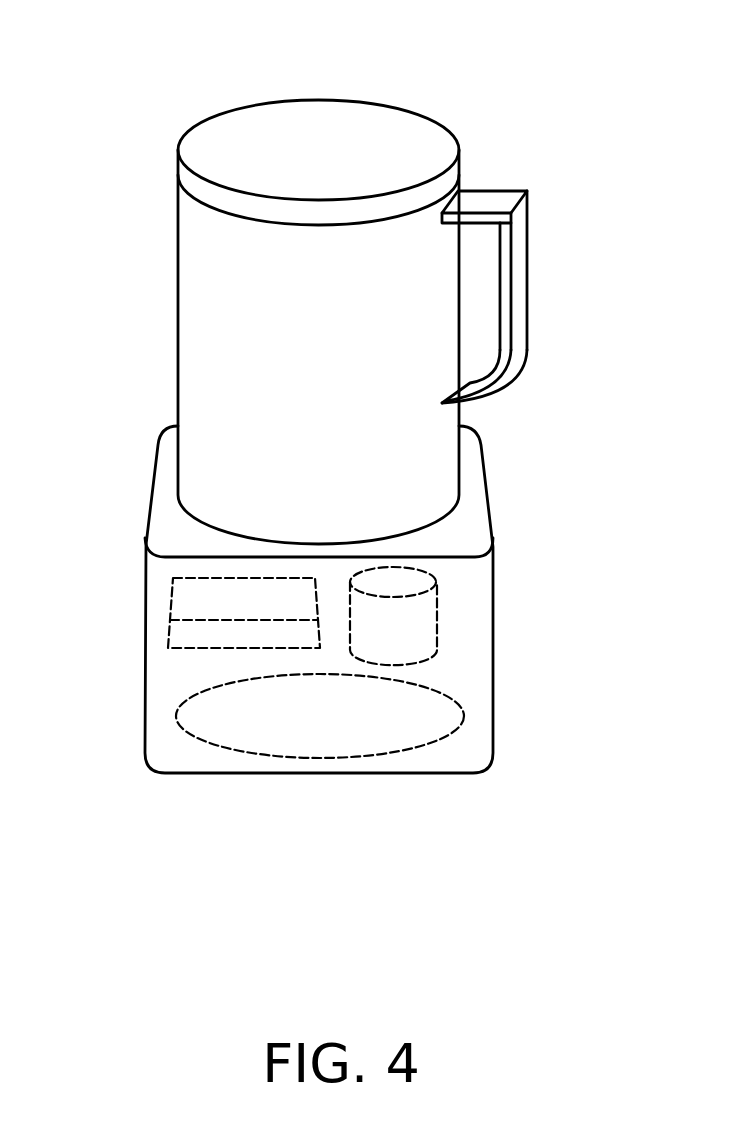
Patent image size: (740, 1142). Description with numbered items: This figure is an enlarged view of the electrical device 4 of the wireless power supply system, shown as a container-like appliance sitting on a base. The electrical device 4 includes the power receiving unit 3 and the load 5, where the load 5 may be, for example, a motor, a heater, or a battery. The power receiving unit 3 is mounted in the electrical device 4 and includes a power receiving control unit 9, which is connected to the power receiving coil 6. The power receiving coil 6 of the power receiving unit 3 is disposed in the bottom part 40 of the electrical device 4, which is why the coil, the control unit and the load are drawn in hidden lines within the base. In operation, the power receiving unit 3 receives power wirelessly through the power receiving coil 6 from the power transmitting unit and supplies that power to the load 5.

The electrical device 4 is at (191, 107).
The bottom part 40 is at (483, 701).
The power receiving unit 3 is at (180, 683).
The power receiving control unit 9 is at (173, 596).
The load 5 is at (425, 618).
The power receiving coil 6 is at (387, 758).